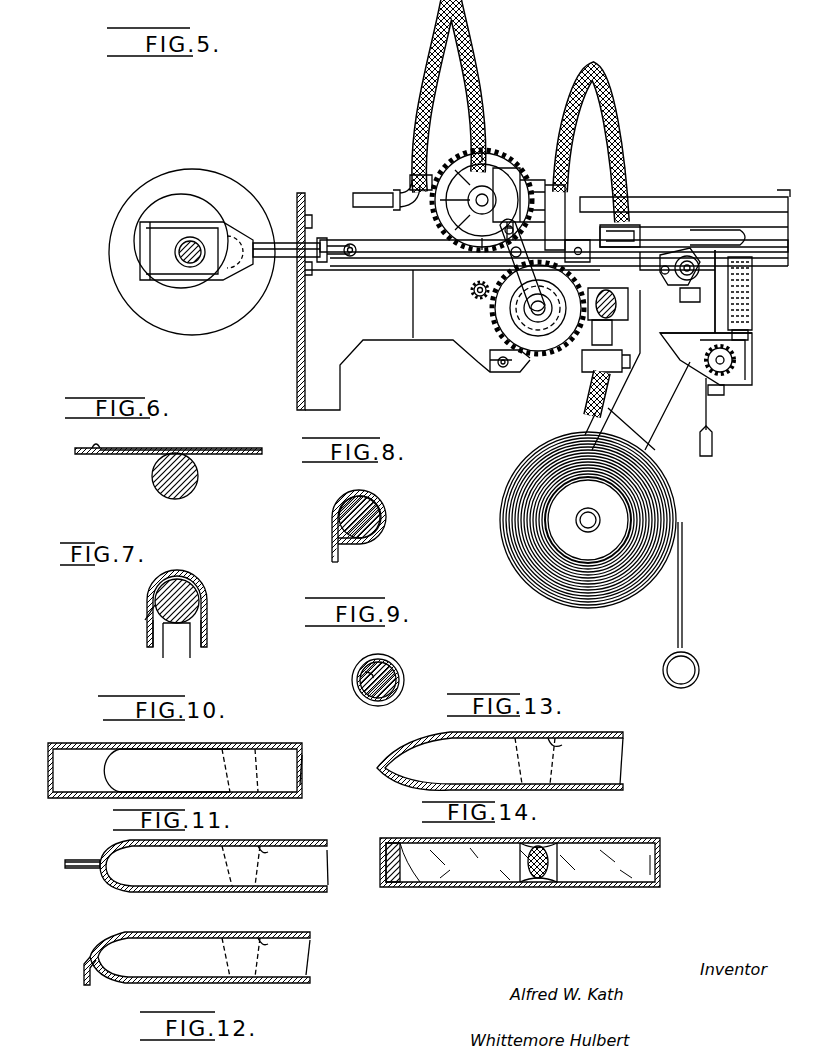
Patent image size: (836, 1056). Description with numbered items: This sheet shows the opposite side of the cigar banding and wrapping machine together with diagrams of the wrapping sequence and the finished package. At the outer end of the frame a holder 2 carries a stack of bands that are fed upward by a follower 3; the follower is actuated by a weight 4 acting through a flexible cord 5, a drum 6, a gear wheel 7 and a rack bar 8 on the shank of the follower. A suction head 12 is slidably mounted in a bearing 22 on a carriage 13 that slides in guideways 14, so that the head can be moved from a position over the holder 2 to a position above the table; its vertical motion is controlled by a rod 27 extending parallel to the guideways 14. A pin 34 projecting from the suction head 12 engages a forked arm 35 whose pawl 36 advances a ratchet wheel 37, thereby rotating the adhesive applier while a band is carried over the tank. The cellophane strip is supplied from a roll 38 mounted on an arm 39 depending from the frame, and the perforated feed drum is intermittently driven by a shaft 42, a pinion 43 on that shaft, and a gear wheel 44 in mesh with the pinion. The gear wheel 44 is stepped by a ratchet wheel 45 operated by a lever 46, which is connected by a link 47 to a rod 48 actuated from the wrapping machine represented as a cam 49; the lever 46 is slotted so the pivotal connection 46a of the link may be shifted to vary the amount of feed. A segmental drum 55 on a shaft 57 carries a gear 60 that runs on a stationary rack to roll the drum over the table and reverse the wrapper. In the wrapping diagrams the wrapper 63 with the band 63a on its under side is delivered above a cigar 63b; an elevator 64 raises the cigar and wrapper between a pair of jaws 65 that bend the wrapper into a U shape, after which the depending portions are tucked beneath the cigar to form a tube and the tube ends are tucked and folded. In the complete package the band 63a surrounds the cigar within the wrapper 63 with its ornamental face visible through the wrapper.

In FIG. 5, the holder 2 is at (752, 308).
In FIG. 5, the follower 3 is at (750, 328).
In FIG. 5, the weight 4 is at (713, 446).
In FIG. 5, the flexible cord 5 is at (708, 413).
In FIG. 5, the drum 6 is at (705, 352).
In FIG. 5, the gear wheel 7 is at (752, 366).
In FIG. 5, the rack bar 8 is at (740, 350).
In FIG. 5, the suction head 12 is at (565, 192).
In FIG. 5, the carriage 13 is at (625, 228).
In FIG. 5, the guideways 14 is at (700, 235).
In FIG. 5, the bearing 22 is at (540, 185).
In FIG. 5, the rod 27 is at (748, 197).
In FIG. 5, the pin 34 is at (580, 258).
In FIG. 5, the forked arm 35 is at (690, 256).
In FIG. 5, the pawl 36 is at (672, 290).
In FIG. 5, the ratchet wheel 37 is at (740, 238).
In FIG. 5, the roll 38 is at (660, 512).
In FIG. 5, the arm 39 is at (637, 370).
In FIG. 5, the shaft 42 is at (616, 290).
In FIG. 5, the pinion 43 is at (626, 300).
In FIG. 5, the gear wheel 44 is at (495, 368).
In FIG. 5, the ratchet wheel 45 is at (520, 324).
In FIG. 5, the lever 46 is at (517, 208).
In FIG. 5, the pivotal connection 46a is at (515, 252).
In FIG. 5, the link 47 is at (386, 248).
In FIG. 5, the rod 48 is at (285, 262).
In FIG. 5, the cam 49 is at (240, 195).
In FIG. 5, the segmental drum 55 is at (452, 165).
In FIG. 5, the shaft 57 is at (490, 186).
In FIG. 5, the gear 60 is at (430, 218).
In FIG. 6, the wrapper 63 is at (92, 456).
In FIG. 7, the wrapper 63 is at (208, 630).
In FIG. 8, the wrapper 63 is at (385, 500).
In FIG. 9, the wrapper 63 is at (395, 662).
In FIG. 10, the wrapper 63 is at (72, 745).
In FIG. 11, the wrapper 63 is at (76, 858).
In FIG. 12, the wrapper 63 is at (142, 932).
In FIG. 13, the wrapper 63 is at (610, 735).
In FIG. 14, the wrapper 63 is at (650, 840).
In FIG. 6, the band 63a is at (119, 456).
In FIG. 7, the band 63a is at (205, 650).
In FIG. 8, the band 63a is at (340, 556).
In FIG. 9, the band 63a is at (365, 670).
In FIG. 10, the band 63a is at (228, 752).
In FIG. 11, the band 63a is at (278, 846).
In FIG. 12, the band 63a is at (272, 938).
In FIG. 13, the band 63a is at (566, 738).
In FIG. 14, the band 63a is at (560, 843).
In FIG. 6, the cigar 63b is at (197, 482).
In FIG. 7, the cigar 63b is at (200, 604).
In FIG. 8, the cigar 63b is at (387, 519).
In FIG. 9, the cigar 63b is at (398, 668).
In FIG. 10, the cigar 63b is at (300, 766).
In FIG. 11, the cigar 63b is at (312, 857).
In FIG. 12, the cigar 63b is at (298, 944).
In FIG. 13, the cigar 63b is at (608, 754).
In FIG. 14, the cigar 63b is at (660, 858).
In FIG. 7, the elevator 64 is at (163, 645).
In FIG. 7, the jaws 65 is at (148, 570).